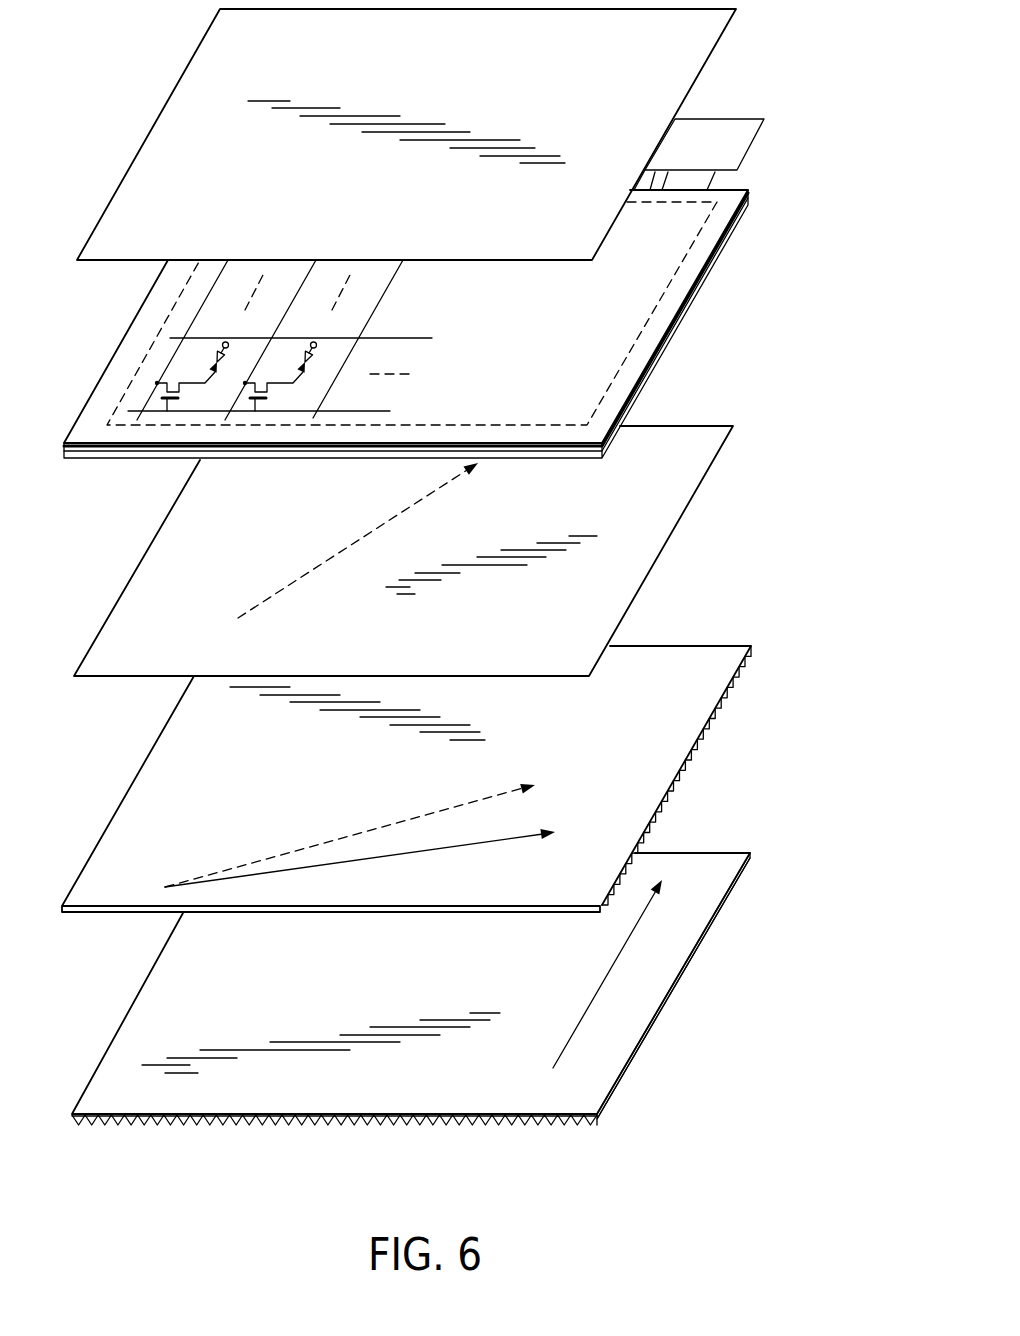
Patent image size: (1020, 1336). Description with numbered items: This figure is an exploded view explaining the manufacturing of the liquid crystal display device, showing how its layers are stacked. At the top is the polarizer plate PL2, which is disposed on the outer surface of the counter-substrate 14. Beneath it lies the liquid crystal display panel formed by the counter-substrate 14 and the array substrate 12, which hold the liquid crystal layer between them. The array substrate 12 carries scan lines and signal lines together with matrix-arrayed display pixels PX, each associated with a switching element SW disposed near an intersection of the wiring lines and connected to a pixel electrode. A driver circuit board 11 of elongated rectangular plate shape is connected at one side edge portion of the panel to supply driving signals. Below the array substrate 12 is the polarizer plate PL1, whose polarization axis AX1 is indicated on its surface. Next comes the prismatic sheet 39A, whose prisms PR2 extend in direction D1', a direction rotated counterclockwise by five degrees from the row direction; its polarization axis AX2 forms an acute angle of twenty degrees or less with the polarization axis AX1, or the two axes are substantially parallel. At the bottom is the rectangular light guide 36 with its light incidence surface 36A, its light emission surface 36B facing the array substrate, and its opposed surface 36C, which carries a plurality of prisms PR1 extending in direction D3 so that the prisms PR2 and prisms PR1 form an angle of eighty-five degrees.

The polarizer plate PL2 is at (685, 60).
The driver circuit board 11 is at (757, 142).
The array substrate 12 is at (663, 353).
The counter-substrate 14 is at (677, 292).
The switching element SW is at (150, 390).
The display pixel PX is at (188, 362).
The polarizer plate PL1 is at (650, 538).
The polarization axis AX1 is at (313, 568).
The prisms PR2 is at (680, 773).
The prismatic sheet 39A is at (700, 685).
The polarization axis AX2 is at (382, 827).
The direction D1' is at (380, 852).
The direction D3 is at (616, 960).
The light guide 36 is at (700, 903).
The opposed surface 36C is at (682, 987).
The light emission surface 36B is at (608, 1062).
The light incidence surface 36A is at (570, 1123).
The prisms PR1 is at (492, 1123).